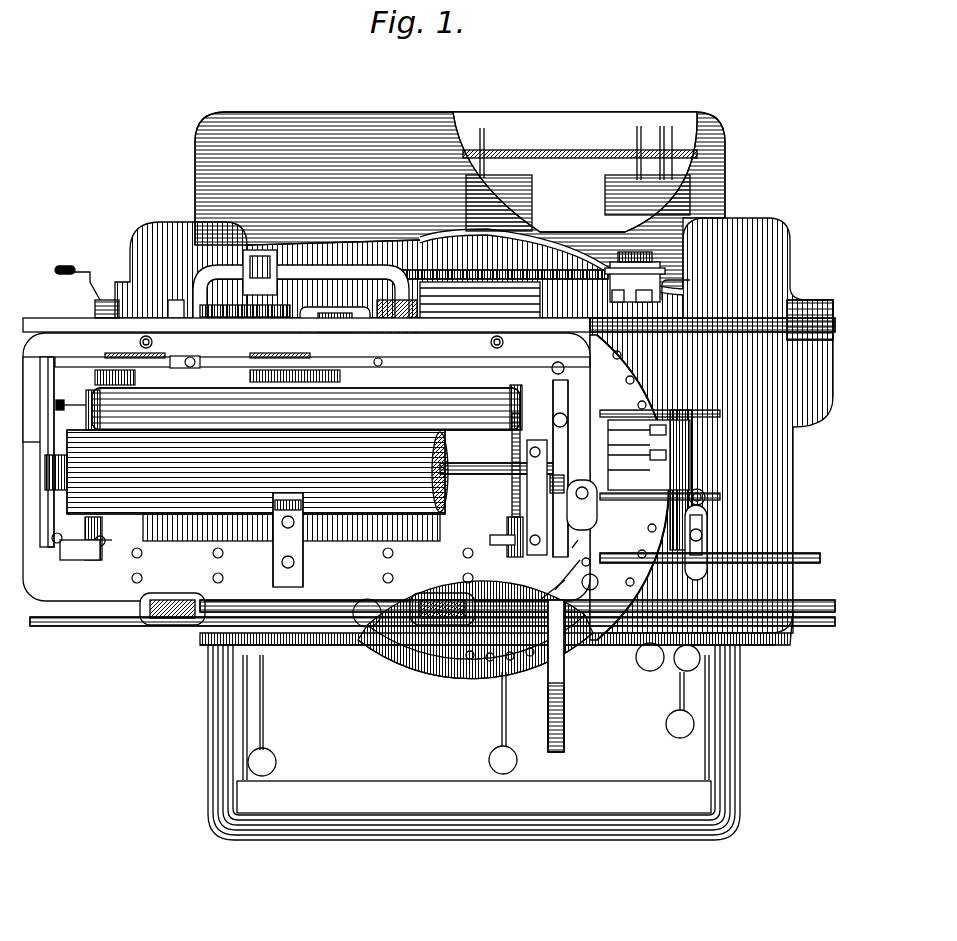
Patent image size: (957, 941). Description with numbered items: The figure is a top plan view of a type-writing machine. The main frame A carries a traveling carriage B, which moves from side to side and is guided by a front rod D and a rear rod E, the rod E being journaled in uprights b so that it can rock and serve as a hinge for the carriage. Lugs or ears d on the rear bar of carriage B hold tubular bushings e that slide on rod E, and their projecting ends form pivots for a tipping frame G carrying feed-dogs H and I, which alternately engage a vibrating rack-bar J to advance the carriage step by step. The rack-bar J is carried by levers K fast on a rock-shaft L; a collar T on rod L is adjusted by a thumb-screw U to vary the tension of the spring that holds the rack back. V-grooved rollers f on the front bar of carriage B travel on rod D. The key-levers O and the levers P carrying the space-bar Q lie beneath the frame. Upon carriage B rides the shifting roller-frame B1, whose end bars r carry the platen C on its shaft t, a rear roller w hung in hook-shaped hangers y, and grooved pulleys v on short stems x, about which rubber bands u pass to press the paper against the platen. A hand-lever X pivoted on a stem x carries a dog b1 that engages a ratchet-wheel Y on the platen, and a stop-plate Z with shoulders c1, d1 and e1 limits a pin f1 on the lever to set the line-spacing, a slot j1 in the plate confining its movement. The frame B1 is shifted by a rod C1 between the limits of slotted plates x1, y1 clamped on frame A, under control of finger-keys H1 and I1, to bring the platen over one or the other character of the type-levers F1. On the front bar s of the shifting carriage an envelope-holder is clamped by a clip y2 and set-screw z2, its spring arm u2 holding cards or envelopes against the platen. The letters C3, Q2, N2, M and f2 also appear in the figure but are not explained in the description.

The main frame A is at (180, 206).
The traveling carriage B is at (429, 456).
The platen C is at (246, 485).
The rail C3 is at (577, 158).
The key-levers O is at (660, 136).
The cavity Q2 is at (578, 203).
The rack-bar J is at (215, 273).
The tipping frame G is at (301, 289).
The feed-dog H is at (248, 262).
The feed-dog I is at (245, 302).
The perforated lugs or ears d is at (176, 310).
The thumb-screw U is at (635, 268).
The rock-shaft L is at (682, 280).
The collar T is at (617, 303).
The levers K is at (645, 292).
The rear guide-bar E is at (650, 325).
The uprights b is at (444, 303).
The tubular bushings e is at (321, 341).
The end bars r is at (320, 452).
The roller w is at (306, 409).
The grooved pulleys v is at (527, 392).
The hook-shaped hangers y is at (58, 408).
The bands or belts u is at (92, 430).
The platen shaft t is at (478, 476).
The shifting roller-frame B1 is at (308, 468).
The dog b1 is at (537, 497).
The ratchet-wheel Y is at (533, 434).
The type-levers F1 is at (660, 480).
The stop-plate Z is at (582, 524).
The short stems x is at (300, 546).
The front bar s is at (294, 563).
The clip y2 is at (288, 538).
The spring arm u2 is at (275, 526).
The spring N2 is at (303, 525).
The stop M is at (268, 550).
The set-screw z2 is at (303, 555).
The guiding rollers f is at (160, 605).
The slot j1 is at (572, 535).
The shoulder e1 is at (588, 552).
The shoulder c1 is at (583, 577).
The stud or pin f1 is at (567, 579).
The link f2 is at (549, 594).
The shoulder d1 is at (618, 581).
The slotted plate y1 is at (697, 487).
The slotted plate x1 is at (707, 545).
The shifting bar or rod C1 is at (770, 563).
The front guide-bar D is at (828, 605).
The space-bar levers P is at (232, 716).
The spacing-bar Q is at (474, 797).
The finger key H1 is at (264, 692).
The hand-lever X is at (566, 676).
The finger key I1 is at (474, 710).